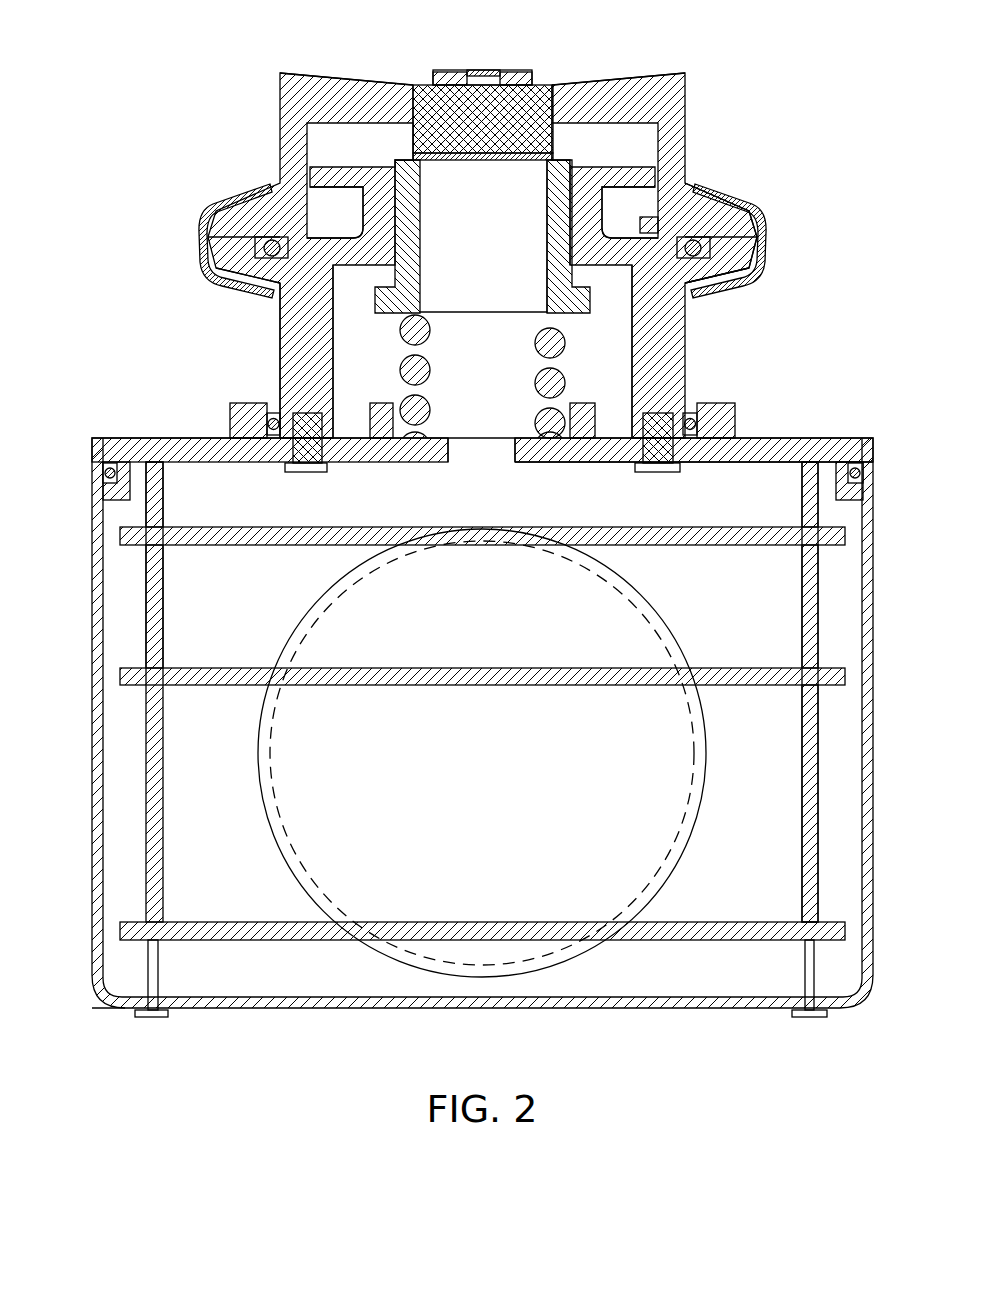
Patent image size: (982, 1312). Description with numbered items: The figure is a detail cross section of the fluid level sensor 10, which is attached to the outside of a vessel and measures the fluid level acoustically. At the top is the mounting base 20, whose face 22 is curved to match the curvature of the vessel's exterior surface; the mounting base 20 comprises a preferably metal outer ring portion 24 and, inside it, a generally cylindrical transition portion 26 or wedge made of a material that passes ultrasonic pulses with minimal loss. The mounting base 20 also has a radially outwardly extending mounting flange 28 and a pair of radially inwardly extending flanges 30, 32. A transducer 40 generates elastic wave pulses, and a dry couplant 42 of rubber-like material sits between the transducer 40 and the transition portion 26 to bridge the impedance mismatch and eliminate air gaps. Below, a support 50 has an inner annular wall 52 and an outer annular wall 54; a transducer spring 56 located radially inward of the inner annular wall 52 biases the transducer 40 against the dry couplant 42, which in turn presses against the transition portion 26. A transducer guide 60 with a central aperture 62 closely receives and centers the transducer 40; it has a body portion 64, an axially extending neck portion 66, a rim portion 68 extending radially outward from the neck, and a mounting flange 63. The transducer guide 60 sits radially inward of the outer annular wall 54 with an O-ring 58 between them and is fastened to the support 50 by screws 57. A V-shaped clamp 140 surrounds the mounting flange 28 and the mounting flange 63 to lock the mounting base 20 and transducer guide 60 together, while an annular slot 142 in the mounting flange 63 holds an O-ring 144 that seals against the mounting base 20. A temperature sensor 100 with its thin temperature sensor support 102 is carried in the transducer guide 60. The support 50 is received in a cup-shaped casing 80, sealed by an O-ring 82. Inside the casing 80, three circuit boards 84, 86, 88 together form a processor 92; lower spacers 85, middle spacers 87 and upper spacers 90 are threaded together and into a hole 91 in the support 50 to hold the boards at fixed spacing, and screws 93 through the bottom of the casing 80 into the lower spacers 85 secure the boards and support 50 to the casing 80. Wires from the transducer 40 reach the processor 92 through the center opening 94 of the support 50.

The fluid level sensor 10 is at (131, 1091).
The mounting base 20 is at (288, 120).
The face 22 is at (333, 73).
The outer ring portion 24 is at (668, 78).
The transition portion 26 is at (553, 95).
The mounting flange 28 is at (705, 205).
The radially inwardly extending flange 30 is at (640, 233).
The radially inwardly extending flange 32 is at (320, 232).
The transducer 40 is at (552, 272).
The dry couplant 42 is at (447, 160).
The support 50 is at (848, 438).
The inner annular wall 52 is at (584, 403).
The outer annular wall 54 is at (712, 410).
The transducer spring 56 is at (428, 365).
The screws 57 is at (314, 472).
The O-ring 58 is at (272, 423).
The transducer guide 60 is at (295, 348).
The central aperture 62 is at (553, 210).
The mounting flange 63 is at (742, 280).
The body portion 64 is at (300, 312).
The neck portion 66 is at (590, 190).
The rim portion 68 is at (645, 215).
The casing 80 is at (874, 798).
The O-ring 82 is at (106, 470).
The circuit board 84 is at (697, 545).
The lower spacers 85 is at (163, 764).
The circuit board 86 is at (746, 685).
The middle spacers 87 is at (163, 589).
The circuit board 88 is at (692, 940).
The upper spacers 90 is at (163, 500).
The hole 91 is at (788, 466).
The processor 92 is at (770, 859).
The screws 93 is at (150, 1017).
The center opening 94 is at (448, 452).
The temperature sensor 100 is at (447, 70).
The temperature sensor support 102 is at (493, 70).
The clamp 140 is at (770, 254).
The annular slot 142 is at (262, 246).
The O-ring 144 is at (766, 216).